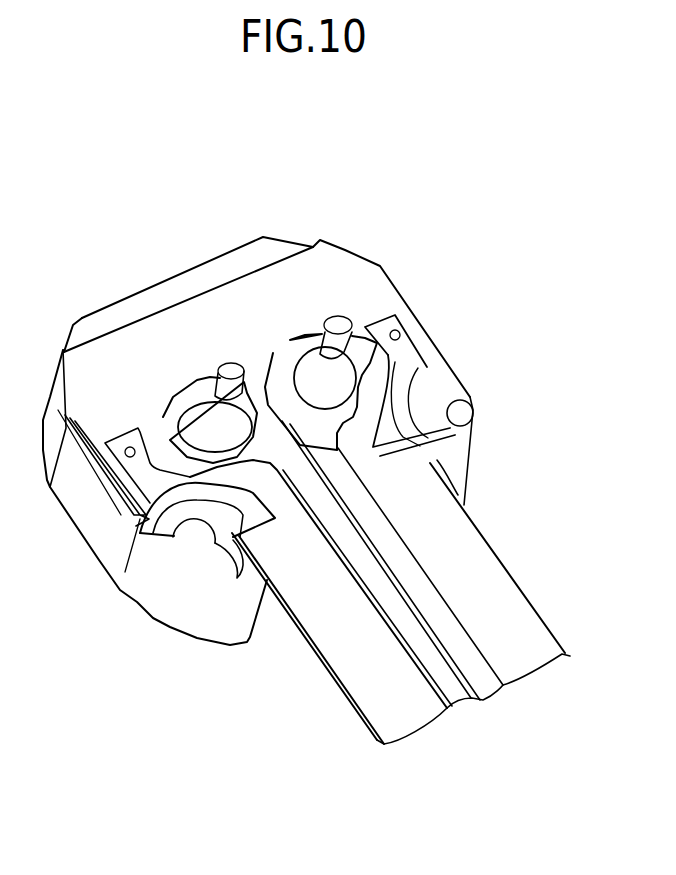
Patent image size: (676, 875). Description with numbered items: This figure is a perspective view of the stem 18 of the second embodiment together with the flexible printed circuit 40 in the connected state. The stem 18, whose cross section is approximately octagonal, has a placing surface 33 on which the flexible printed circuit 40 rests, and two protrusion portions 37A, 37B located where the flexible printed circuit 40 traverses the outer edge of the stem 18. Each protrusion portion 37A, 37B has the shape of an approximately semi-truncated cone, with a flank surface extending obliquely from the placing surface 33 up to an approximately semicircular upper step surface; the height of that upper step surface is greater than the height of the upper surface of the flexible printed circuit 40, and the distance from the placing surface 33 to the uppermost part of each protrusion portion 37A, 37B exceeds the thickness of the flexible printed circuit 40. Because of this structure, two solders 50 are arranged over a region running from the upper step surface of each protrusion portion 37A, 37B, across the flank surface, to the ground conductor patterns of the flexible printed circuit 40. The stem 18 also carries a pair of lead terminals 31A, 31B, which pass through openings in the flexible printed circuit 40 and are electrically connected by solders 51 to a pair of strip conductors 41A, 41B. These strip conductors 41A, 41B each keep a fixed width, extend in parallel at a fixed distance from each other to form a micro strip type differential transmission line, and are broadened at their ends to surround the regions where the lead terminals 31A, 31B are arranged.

The stem 18 is at (107, 308).
The placing surface 33 is at (220, 260).
The lead terminal 31A is at (232, 370).
The lead terminal 31B is at (340, 327).
The solder 51 is at (210, 412).
The solder 50 is at (180, 513).
The protrusion portion 37A is at (193, 543).
The protrusion portion 37B is at (468, 415).
The flexible printed circuit 40 is at (500, 552).
The strip conductor 41A is at (430, 680).
The strip conductor 41B is at (462, 650).